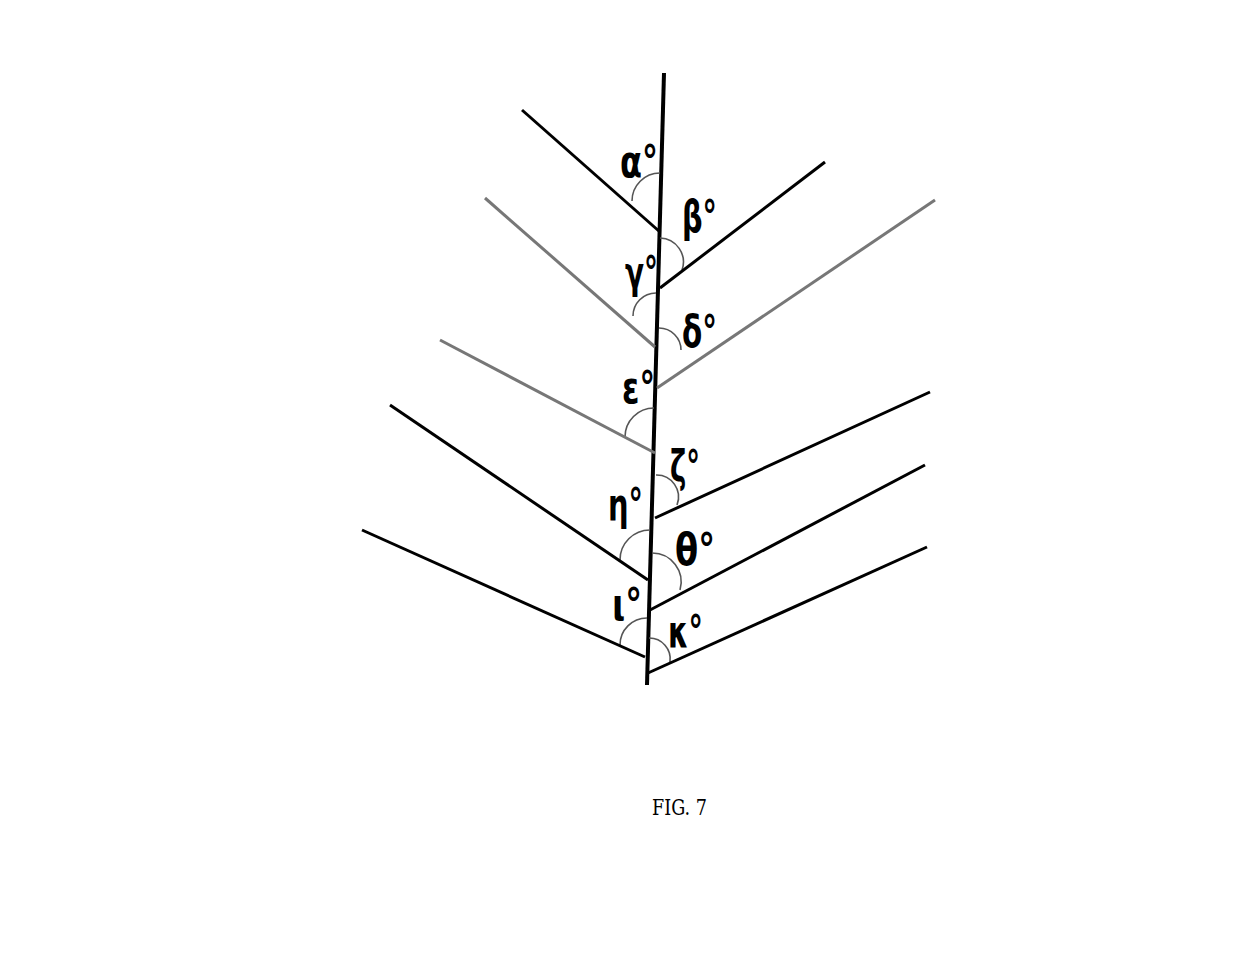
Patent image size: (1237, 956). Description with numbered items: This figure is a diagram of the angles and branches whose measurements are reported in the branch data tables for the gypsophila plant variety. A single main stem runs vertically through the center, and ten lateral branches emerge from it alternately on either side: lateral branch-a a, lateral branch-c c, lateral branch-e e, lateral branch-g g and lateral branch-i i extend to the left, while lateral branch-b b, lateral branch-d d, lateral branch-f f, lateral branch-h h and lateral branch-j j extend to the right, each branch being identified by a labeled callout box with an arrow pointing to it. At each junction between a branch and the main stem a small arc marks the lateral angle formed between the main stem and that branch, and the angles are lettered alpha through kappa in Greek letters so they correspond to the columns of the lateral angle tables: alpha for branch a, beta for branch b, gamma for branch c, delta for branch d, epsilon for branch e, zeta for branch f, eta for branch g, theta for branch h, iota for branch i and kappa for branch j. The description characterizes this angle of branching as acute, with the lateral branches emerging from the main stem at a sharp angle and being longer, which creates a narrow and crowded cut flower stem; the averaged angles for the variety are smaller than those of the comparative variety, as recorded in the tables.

The Lateral branch- a is at (486, 118).
The Lateral branch- b is at (828, 145).
The Lateral branch- c is at (506, 234).
The Lateral branch- d is at (935, 208).
The Lateral branch- e is at (423, 340).
The Lateral branch- f is at (951, 390).
The Lateral branch- g is at (391, 440).
The Lateral branch- h is at (959, 454).
The Lateral branch- i is at (451, 594).
The Lateral branch- j is at (900, 576).